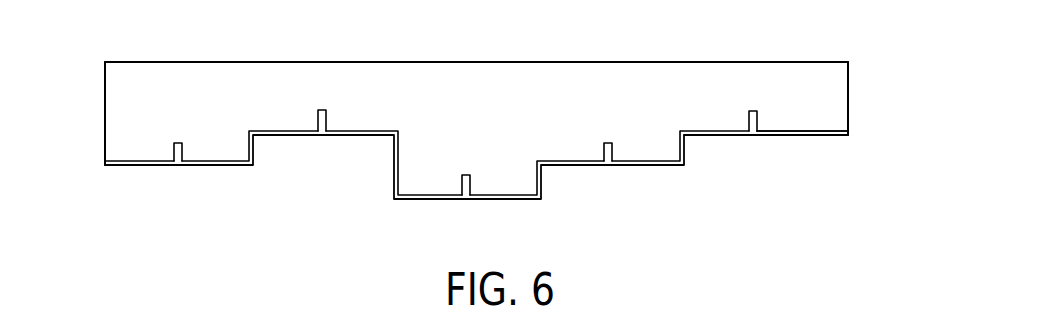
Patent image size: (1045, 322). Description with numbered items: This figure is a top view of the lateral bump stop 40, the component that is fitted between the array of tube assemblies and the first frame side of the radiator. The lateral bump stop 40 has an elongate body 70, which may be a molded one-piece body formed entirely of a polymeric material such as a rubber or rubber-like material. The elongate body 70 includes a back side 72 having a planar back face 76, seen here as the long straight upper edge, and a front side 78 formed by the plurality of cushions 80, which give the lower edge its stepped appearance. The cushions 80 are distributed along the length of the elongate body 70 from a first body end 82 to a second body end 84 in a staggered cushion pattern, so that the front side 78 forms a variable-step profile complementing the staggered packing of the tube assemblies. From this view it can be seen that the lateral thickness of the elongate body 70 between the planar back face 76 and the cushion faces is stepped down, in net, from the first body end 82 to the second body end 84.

The lateral bump stop 40 is at (867, 69).
The elongate body 70 is at (848, 128).
The back side 72 is at (359, 55).
The planar back face 76 is at (513, 61).
The front side 78 is at (271, 163).
The cushions 80 is at (155, 166).
The first body end 82 is at (104, 113).
The second body end 84 is at (848, 99).